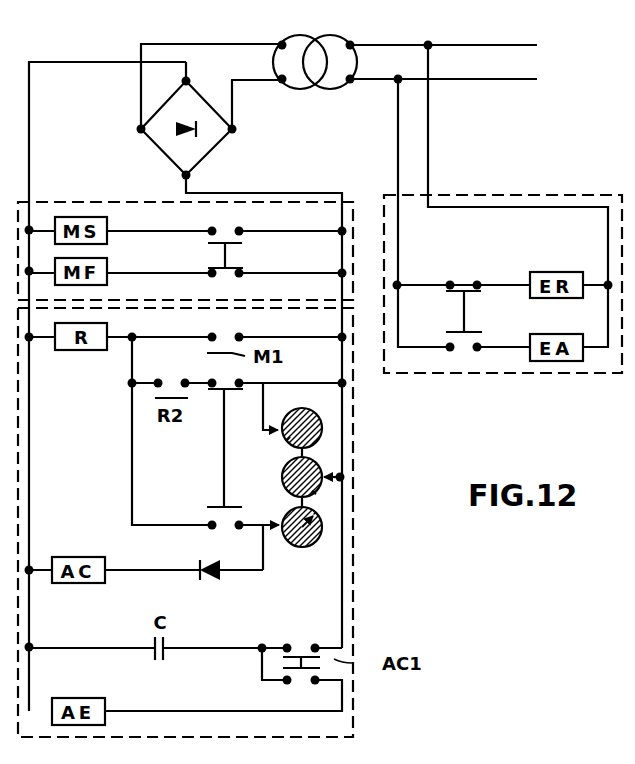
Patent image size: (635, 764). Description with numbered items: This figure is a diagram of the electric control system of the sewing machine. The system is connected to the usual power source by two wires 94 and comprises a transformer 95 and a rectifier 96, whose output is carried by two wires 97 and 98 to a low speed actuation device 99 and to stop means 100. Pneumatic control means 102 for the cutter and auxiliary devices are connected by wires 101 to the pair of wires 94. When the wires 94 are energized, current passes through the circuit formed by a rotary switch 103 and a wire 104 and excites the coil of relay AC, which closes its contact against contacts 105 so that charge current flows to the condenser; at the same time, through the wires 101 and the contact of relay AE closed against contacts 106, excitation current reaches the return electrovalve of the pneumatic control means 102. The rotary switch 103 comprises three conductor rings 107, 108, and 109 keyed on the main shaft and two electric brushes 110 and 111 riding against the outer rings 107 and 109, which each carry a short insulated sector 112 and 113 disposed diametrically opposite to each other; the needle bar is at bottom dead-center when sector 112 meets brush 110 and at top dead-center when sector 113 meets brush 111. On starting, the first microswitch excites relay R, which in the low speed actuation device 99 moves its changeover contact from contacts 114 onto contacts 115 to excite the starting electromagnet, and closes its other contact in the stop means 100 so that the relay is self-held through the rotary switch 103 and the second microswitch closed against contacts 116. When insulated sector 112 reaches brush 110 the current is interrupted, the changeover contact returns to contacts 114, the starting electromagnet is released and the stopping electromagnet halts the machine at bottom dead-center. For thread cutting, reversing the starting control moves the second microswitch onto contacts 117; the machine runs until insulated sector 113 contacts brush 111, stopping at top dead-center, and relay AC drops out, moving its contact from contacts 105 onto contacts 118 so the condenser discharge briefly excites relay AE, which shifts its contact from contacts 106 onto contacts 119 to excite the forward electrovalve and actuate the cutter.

The wires 94 is at (497, 48).
The transformer 95 is at (318, 90).
The rectifier 96 is at (212, 152).
The wire 97 is at (31, 157).
The wire 98 is at (306, 192).
The low speed actuation device 99 is at (354, 215).
The stop means 100 is at (354, 580).
The wires 101 is at (398, 166).
The pneumatic control means 102 is at (560, 195).
The rotary switch 103 is at (321, 463).
The wire 104 is at (150, 570).
The contacts 105 is at (302, 644).
The contacts 106 is at (476, 293).
The outer conductor ring 107 is at (320, 421).
The conductor ring 108 is at (314, 491).
The outer conductor ring 109 is at (316, 511).
The electric brush 110 is at (270, 424).
The electric brush 111 is at (274, 532).
The insulated sector 112 is at (288, 439).
The insulated sector 113 is at (315, 542).
The contacts 114 is at (239, 273).
The contacts 115 is at (225, 220).
The contacts 116 is at (219, 432).
The contacts 117 is at (225, 540).
The contacts 118 is at (302, 693).
The contacts 119 is at (465, 359).